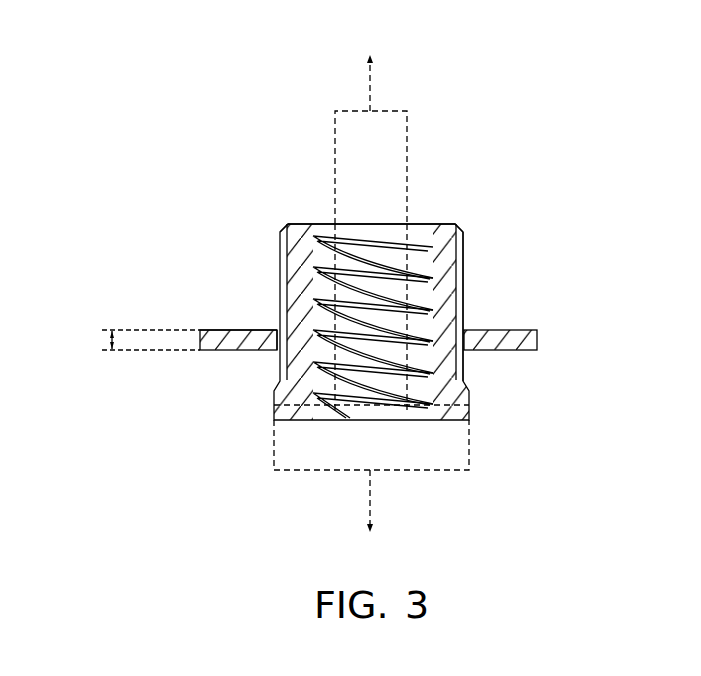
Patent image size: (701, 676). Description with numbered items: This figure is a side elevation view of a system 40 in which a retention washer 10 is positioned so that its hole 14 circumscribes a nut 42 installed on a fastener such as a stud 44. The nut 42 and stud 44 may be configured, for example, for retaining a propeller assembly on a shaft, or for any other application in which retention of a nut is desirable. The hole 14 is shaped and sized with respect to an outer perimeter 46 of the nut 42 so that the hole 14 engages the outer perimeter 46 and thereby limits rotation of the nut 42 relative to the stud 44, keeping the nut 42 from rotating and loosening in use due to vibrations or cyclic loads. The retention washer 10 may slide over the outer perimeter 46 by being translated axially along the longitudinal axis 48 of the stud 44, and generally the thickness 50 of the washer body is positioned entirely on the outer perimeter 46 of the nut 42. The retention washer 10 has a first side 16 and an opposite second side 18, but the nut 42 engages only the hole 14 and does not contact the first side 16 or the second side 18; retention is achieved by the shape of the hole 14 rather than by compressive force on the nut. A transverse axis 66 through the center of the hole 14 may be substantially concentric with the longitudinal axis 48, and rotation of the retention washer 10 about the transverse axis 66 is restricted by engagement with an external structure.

The retention washer 10 is at (524, 322).
The hole 14 is at (277, 337).
The first side 16 is at (240, 328).
The second side 18 is at (240, 350).
The system 40 is at (606, 132).
The nut 42 is at (446, 220).
The stud 44 is at (290, 470).
The outer perimeter 46 is at (462, 365).
The longitudinal axis 48 is at (371, 88).
The thickness 50 is at (104, 340).
The transverse axis 66 is at (389, 128).